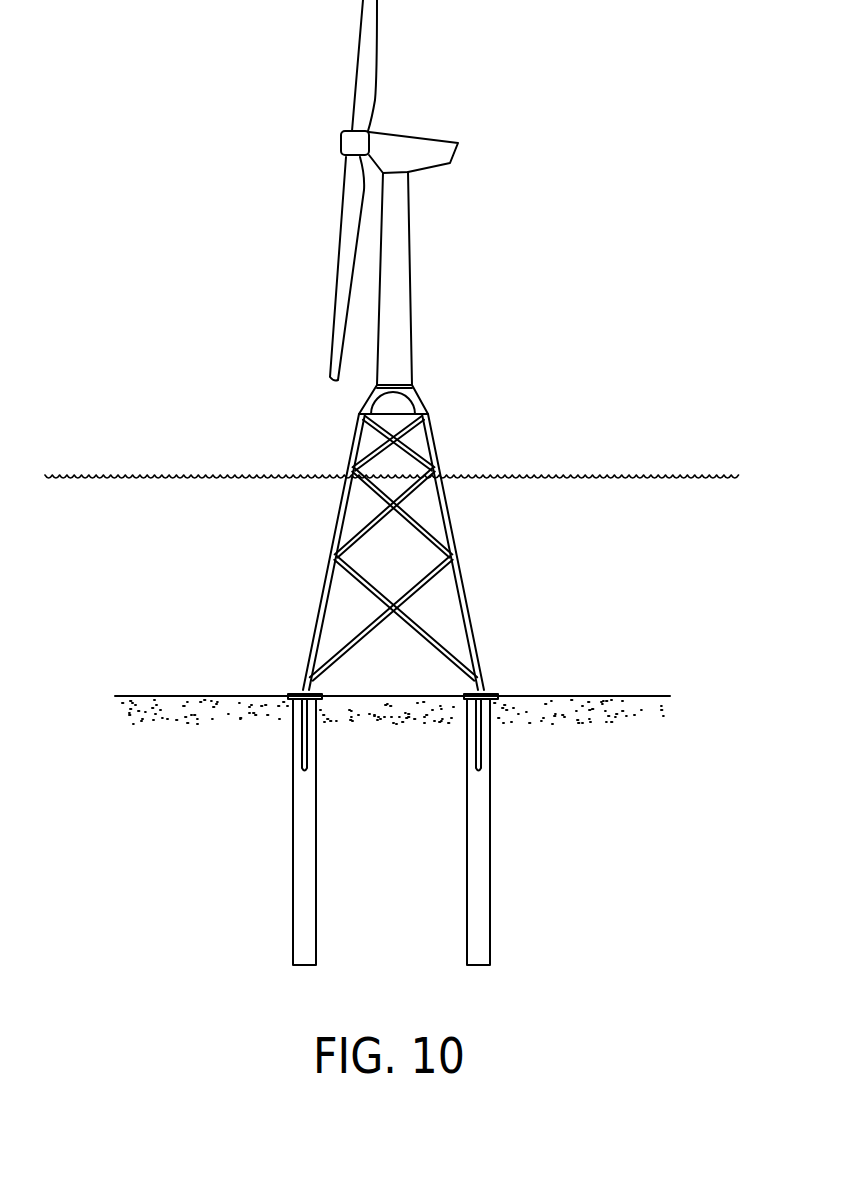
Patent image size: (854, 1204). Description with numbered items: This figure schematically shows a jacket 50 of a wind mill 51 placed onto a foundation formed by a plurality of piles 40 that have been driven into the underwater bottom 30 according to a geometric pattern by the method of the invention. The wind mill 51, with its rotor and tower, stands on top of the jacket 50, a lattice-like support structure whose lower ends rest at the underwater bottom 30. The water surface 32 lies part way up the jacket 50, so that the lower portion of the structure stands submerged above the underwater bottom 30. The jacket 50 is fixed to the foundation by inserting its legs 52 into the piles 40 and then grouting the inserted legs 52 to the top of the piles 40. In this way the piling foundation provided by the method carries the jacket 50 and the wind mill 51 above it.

The wind mill 51 is at (314, 111).
The jacket 50 is at (492, 568).
The water surface / sea level 32 is at (203, 475).
The underwater bottom 30 is at (404, 749).
The piles 40 is at (298, 869).
The legs 52 is at (302, 747).